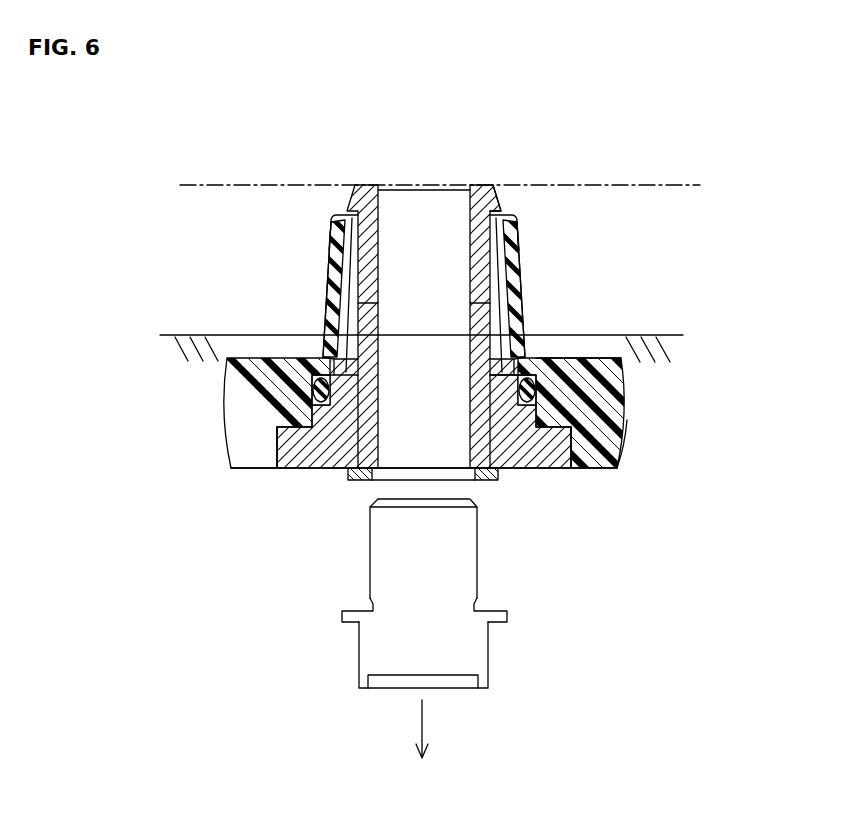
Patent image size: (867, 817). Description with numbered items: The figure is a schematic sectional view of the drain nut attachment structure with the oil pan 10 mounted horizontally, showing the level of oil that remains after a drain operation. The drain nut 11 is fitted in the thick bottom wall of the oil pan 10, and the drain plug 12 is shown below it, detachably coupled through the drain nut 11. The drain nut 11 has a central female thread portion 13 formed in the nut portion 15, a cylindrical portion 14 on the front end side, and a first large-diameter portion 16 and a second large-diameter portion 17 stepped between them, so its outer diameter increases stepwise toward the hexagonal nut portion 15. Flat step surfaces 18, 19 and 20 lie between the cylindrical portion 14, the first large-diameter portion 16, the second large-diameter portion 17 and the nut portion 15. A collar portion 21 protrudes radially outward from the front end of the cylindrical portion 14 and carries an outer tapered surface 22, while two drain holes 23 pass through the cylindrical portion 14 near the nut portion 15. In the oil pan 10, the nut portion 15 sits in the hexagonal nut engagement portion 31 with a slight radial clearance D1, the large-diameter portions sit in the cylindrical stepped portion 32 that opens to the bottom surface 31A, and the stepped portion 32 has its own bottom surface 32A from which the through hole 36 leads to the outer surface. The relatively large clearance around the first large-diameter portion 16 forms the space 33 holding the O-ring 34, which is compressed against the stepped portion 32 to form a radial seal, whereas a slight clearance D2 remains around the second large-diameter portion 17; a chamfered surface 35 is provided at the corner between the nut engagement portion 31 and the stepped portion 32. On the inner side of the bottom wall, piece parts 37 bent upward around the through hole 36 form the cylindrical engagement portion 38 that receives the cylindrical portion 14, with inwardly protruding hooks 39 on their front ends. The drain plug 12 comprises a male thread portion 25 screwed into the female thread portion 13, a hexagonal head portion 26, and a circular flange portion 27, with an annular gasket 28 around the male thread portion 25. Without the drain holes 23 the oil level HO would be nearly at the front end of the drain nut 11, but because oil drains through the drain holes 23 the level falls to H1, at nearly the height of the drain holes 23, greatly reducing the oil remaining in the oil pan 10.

The oil pan 10 is at (605, 350).
The drain nut 11 is at (534, 484).
The drain plug 12 is at (400, 628).
The female thread portion 13 is at (465, 452).
The cylindrical portion 14 is at (483, 270).
The nut portion 15 is at (433, 373).
The first large-diameter portion 16 is at (526, 376).
The second large-diameter portion 17 is at (560, 462).
The step surface 18 is at (522, 342).
The step surface 19 is at (622, 392).
The step surface 20 is at (627, 430).
The collar portion 21 is at (499, 204).
The tapered surface 22 is at (493, 198).
The drain holes 23 is at (489, 306).
The male thread portion 25 is at (400, 582).
The head portion 26 is at (442, 655).
The flange portion 27 is at (340, 618).
The gasket 28 is at (499, 478).
The nut engagement portion 31 is at (627, 463).
The bottom surface of the nut engagement portion 31A is at (232, 452).
The stepped portion 32 is at (263, 358).
The bottom surface of the stepped portion 32A is at (292, 367).
The space 33 is at (270, 402).
The O-ring 34 is at (548, 360).
The chamfered surface 35 is at (277, 468).
The through hole 36 is at (372, 333).
The piece parts 37 is at (465, 340).
The cylindrical engagement portion 38 is at (334, 280).
The hooks 39 is at (346, 216).
The oil level H0 HO is at (636, 185).
The oil level H1 is at (670, 336).
The radial clearance D1 is at (592, 462).
The clearance D2 is at (270, 404).